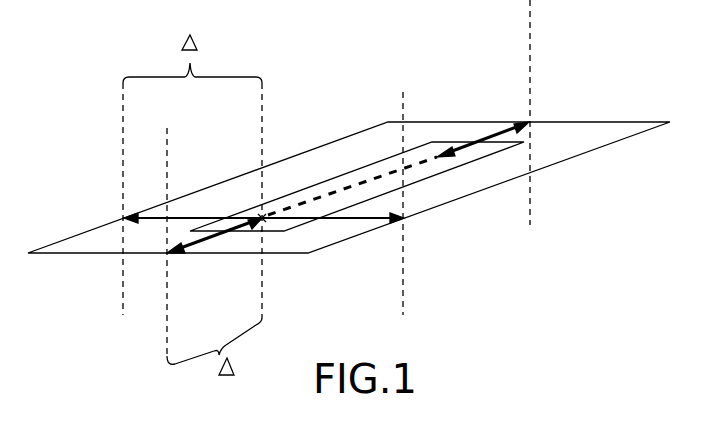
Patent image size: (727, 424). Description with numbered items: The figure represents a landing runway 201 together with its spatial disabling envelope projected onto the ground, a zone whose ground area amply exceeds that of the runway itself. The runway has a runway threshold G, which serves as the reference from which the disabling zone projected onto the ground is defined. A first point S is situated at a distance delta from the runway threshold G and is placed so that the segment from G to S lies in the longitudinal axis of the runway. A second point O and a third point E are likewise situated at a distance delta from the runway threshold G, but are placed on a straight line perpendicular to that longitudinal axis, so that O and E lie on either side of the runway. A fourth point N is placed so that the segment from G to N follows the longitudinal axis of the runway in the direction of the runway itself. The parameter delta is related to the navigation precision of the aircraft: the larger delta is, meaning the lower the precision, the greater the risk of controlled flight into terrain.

The landing runway 201 is at (392, 163).
The second point O is at (249, 207).
The third point E is at (416, 203).
The first point S is at (203, 242).
The runway threshold G is at (270, 197).
The fourth point N is at (493, 112).